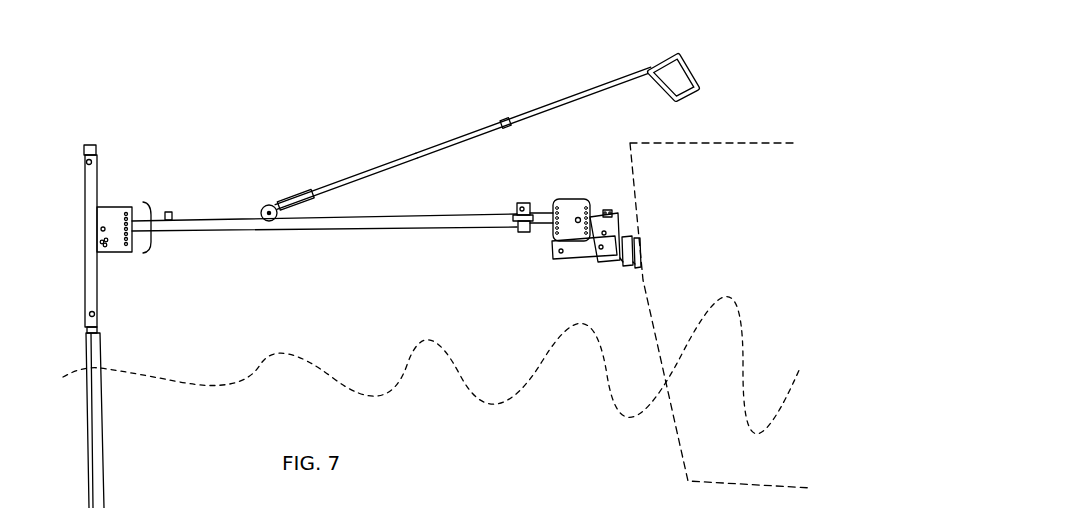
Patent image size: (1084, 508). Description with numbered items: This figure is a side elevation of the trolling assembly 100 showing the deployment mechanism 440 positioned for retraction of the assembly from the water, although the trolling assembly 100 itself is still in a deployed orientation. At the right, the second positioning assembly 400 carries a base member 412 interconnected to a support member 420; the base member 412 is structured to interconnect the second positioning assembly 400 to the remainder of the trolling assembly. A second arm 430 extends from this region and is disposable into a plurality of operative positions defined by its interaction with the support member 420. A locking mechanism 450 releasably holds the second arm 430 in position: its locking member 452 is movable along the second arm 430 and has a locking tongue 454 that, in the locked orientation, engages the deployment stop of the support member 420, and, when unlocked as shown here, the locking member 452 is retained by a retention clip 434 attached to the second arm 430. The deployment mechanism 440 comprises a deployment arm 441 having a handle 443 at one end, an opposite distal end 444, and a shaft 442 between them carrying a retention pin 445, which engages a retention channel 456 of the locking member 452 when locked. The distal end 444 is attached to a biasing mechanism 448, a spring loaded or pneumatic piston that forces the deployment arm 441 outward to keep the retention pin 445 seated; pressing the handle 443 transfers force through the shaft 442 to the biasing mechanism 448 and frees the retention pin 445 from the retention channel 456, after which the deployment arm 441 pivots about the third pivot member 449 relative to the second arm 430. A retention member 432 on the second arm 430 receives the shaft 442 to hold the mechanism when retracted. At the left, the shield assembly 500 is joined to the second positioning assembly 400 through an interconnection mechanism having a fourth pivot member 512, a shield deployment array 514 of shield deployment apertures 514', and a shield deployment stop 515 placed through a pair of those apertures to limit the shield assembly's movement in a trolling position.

The trolling assembly 100 is at (258, 66).
The second positioning assembly 400 is at (432, 252).
The base member 412 is at (577, 258).
The support member 420 is at (581, 198).
The second arm 430 is at (306, 233).
The retention member 432 is at (169, 212).
The retention clip 434 is at (515, 232).
The deployment mechanism 440 is at (400, 140).
The deployment arm 441 is at (568, 97).
The shaft 442 is at (387, 177).
The handle 443 is at (697, 68).
The distal end 444 is at (326, 192).
The retention pin 445 is at (505, 124).
The biasing mechanism 448 is at (266, 207).
The third pivot member 449 is at (270, 223).
The locking mechanism 450 is at (507, 205).
The locking member 452 is at (524, 202).
The locking tongue 454 is at (557, 258).
The retention channel 456 is at (519, 204).
The shield assembly 500 is at (80, 318).
The fourth pivot member 512 is at (301, 420).
The shield deployment array 514 is at (185, 242).
The shield deployment apertures 514' is at (131, 282).
The shield deployment stop 515 is at (132, 207).